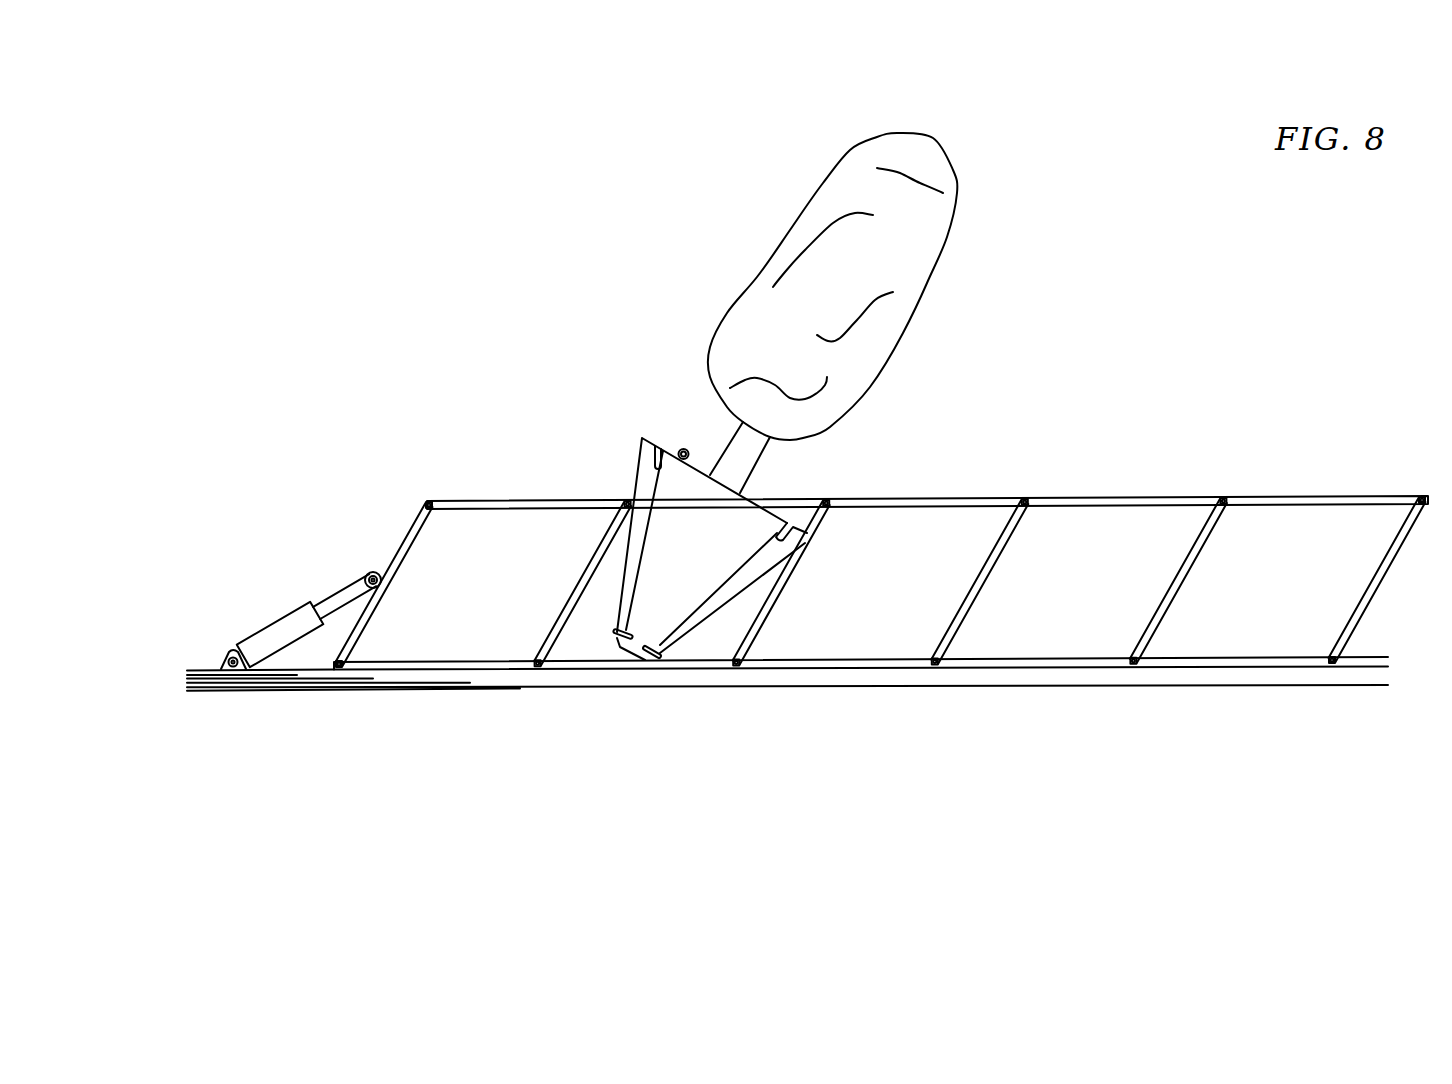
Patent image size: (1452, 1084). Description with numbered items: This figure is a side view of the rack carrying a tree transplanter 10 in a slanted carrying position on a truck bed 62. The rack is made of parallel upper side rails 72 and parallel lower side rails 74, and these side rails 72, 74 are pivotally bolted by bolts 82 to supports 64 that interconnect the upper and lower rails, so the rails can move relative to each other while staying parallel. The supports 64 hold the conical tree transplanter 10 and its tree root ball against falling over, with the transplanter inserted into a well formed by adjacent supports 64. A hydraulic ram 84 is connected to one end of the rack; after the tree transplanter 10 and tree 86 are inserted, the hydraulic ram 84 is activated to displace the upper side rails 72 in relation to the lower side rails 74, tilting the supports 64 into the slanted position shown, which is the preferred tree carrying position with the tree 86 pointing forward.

The tree transplanter 10 is at (638, 406).
The truck bed 62 is at (660, 690).
The supports 64 is at (403, 543).
The upper side rails 72 is at (538, 500).
The lower side rails 74 is at (857, 668).
The bolts 82 is at (535, 660).
The hydraulic ram 84 is at (288, 610).
The tree 86 is at (937, 265).